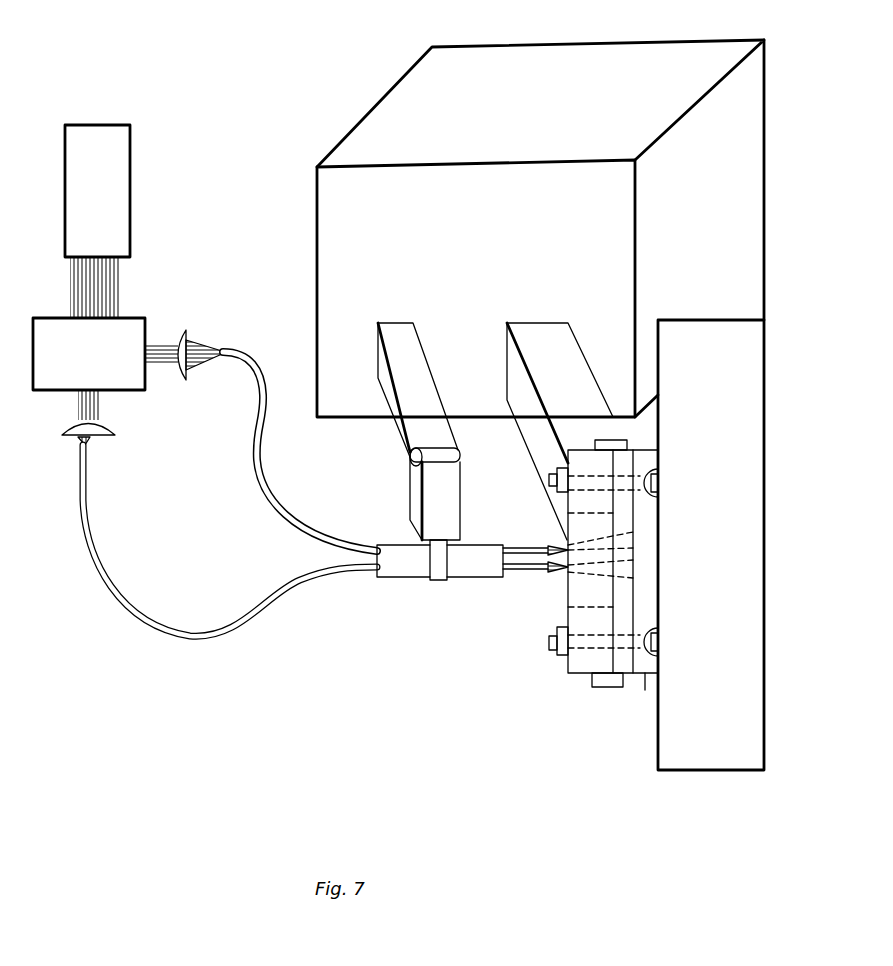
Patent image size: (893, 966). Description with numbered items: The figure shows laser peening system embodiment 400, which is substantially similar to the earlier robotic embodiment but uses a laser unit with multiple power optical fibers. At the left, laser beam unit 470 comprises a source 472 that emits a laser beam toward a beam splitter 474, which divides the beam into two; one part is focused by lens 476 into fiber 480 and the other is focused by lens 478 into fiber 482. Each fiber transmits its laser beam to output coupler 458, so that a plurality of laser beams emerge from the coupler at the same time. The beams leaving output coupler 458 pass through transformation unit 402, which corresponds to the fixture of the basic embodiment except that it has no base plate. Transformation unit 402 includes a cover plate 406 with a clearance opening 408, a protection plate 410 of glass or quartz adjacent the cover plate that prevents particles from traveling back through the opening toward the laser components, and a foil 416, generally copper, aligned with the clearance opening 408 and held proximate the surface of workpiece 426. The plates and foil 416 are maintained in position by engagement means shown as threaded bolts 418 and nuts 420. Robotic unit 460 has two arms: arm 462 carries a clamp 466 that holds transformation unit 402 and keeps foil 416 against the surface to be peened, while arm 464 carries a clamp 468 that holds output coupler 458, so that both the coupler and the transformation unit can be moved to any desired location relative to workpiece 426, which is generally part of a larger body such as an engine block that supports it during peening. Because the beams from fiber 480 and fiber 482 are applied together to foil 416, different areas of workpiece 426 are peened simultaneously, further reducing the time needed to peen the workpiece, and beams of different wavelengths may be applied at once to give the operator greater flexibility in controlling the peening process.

The laser peening system embodiment 400 is at (770, 14).
The transformation unit 402 is at (603, 581).
The cover plate 406 is at (580, 675).
The clearance opening 408 is at (585, 607).
The protection plate 410 is at (628, 675).
The foil 416 is at (643, 675).
The threaded bolts 418 is at (665, 483).
The nuts 420 is at (560, 492).
The workpiece 426 is at (752, 373).
The output coupler 458 is at (390, 575).
The robotic unit 460 is at (765, 148).
The arm 462 is at (550, 330).
The arm 464 is at (410, 332).
The clamp 466 is at (612, 446).
The clamp 468 is at (438, 580).
The laser beam unit 470 is at (144, 209).
The source 472 is at (137, 133).
The beam splitter 474 is at (128, 328).
The lens 476 is at (105, 429).
The lens 478 is at (186, 336).
The fiber 480 is at (118, 595).
The fiber 482 is at (251, 458).